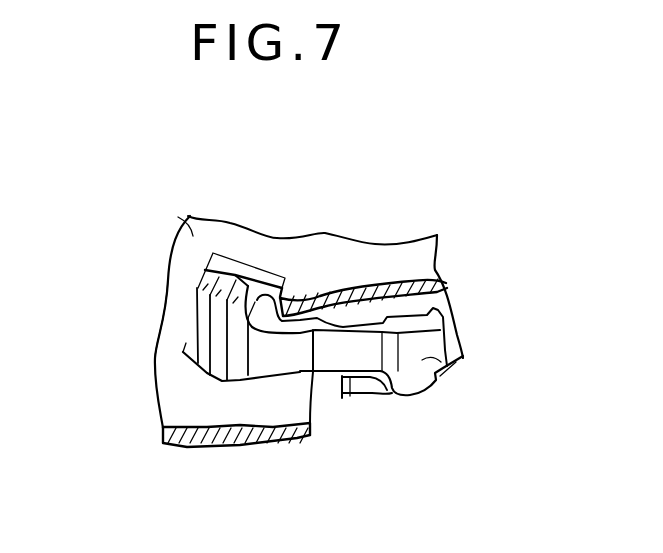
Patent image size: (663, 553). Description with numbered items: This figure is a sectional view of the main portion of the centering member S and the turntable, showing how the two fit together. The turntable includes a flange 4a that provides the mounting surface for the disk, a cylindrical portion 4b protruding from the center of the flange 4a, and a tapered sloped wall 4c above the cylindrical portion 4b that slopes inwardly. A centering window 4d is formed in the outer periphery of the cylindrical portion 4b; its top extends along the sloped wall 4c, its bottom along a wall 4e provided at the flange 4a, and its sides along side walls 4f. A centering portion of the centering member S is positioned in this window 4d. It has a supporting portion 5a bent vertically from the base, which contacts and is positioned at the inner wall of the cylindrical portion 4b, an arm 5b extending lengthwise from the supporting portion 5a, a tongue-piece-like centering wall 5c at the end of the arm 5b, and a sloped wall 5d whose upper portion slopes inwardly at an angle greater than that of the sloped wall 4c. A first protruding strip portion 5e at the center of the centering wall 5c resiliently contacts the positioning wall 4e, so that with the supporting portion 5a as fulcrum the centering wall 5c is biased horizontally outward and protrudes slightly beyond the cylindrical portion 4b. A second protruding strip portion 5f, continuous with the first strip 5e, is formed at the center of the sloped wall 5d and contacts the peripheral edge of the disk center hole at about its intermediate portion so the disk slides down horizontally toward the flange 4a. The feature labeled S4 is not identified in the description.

The flange 4a is at (180, 407).
The cylindrical portion 4b is at (183, 298).
The sloped wall 4c is at (178, 217).
The centering window 4d is at (266, 275).
The wall (positioning wall) 4e is at (223, 380).
The side wall 4f is at (183, 350).
The supporting portion 5a is at (460, 367).
The arm 5b is at (358, 352).
The centering wall 5c is at (198, 330).
The sloped wall 5d is at (202, 278).
The first protruding strip portion 5e is at (215, 385).
The second protruding strip portion 5f is at (237, 270).
The centering member S is at (405, 391).
The engagement portion S4 is at (368, 380).